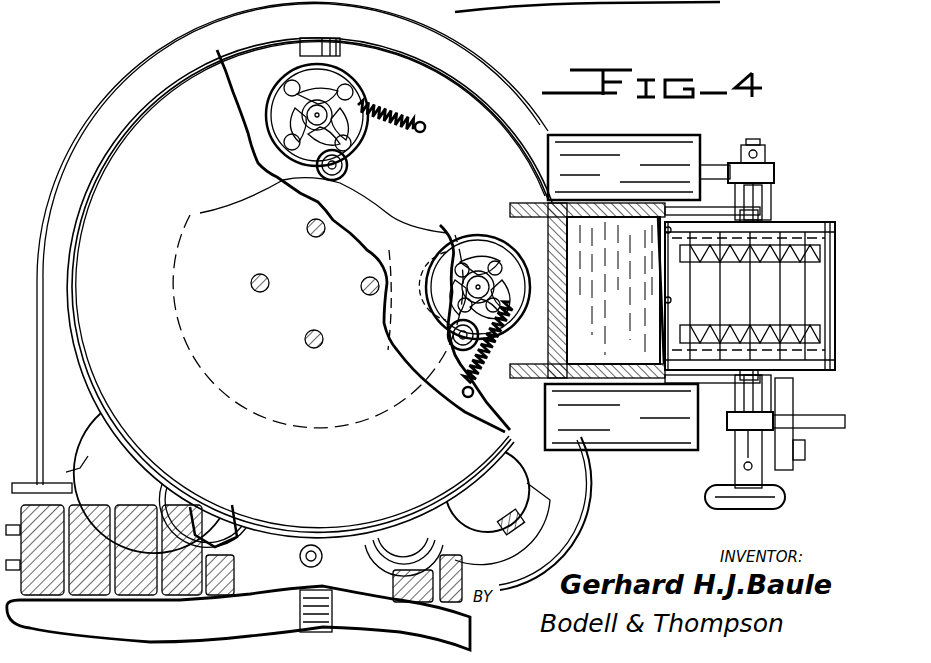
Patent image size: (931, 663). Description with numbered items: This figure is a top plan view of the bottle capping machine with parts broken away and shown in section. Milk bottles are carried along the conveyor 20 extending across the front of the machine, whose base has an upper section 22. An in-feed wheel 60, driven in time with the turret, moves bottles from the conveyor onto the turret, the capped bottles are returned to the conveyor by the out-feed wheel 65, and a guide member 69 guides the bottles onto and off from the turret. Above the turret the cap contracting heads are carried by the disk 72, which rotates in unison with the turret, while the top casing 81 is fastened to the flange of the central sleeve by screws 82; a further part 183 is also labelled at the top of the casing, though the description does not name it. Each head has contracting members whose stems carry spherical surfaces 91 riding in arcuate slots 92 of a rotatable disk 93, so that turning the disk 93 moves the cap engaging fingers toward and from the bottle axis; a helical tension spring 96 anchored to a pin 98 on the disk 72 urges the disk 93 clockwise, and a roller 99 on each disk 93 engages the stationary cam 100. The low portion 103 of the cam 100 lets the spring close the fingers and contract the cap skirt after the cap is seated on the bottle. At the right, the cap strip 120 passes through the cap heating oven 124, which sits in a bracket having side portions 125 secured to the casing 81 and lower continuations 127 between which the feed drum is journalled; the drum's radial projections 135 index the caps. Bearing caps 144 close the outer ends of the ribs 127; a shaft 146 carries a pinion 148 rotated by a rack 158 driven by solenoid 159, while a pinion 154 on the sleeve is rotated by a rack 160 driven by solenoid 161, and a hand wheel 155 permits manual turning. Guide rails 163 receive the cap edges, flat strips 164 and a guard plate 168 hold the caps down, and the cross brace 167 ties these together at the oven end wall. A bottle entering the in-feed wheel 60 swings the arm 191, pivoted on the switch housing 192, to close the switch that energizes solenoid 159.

The conveyor 20 is at (232, 542).
The upper base section 22 is at (90, 137).
The in-feed wheel 60 is at (530, 527).
The out-feed wheel 65 is at (88, 480).
The guide member 69 is at (514, 6).
The disk 72 is at (455, 170).
The top casing 81 is at (309, 288).
The screws 82 is at (313, 235).
The spherical surfaces 91 is at (311, 115).
The arcuate slots 92 is at (318, 100).
The disk 93 is at (347, 138).
The helical tension spring 96 is at (386, 110).
The pin 98 is at (426, 127).
The roller 99 is at (347, 165).
The cam 100 is at (417, 238).
The low portion of the cam 103 is at (378, 212).
The cap strip 120 is at (812, 336).
The cap heating oven 124 is at (613, 290).
The side portions 125 is at (637, 216).
The continuation of the bracket 127 is at (712, 215).
The radial projections 135 is at (768, 250).
The bearing caps 144 is at (771, 195).
The shaft 146 is at (760, 142).
The pinion 148 is at (767, 160).
The pinion 154 is at (732, 440).
The hand wheel 155 is at (786, 499).
The rack 158 is at (776, 174).
The solenoid 159 is at (642, 147).
The rack 160 is at (815, 424).
The solenoid 161 is at (655, 450).
The guide rails 163 is at (830, 278).
The flat strips 164 is at (812, 240).
The cross brace 167 is at (676, 296).
The guard plate 168 is at (721, 300).
The bracket 183 is at (322, 44).
The arm 191 is at (501, 533).
The switch housing 192 is at (520, 474).